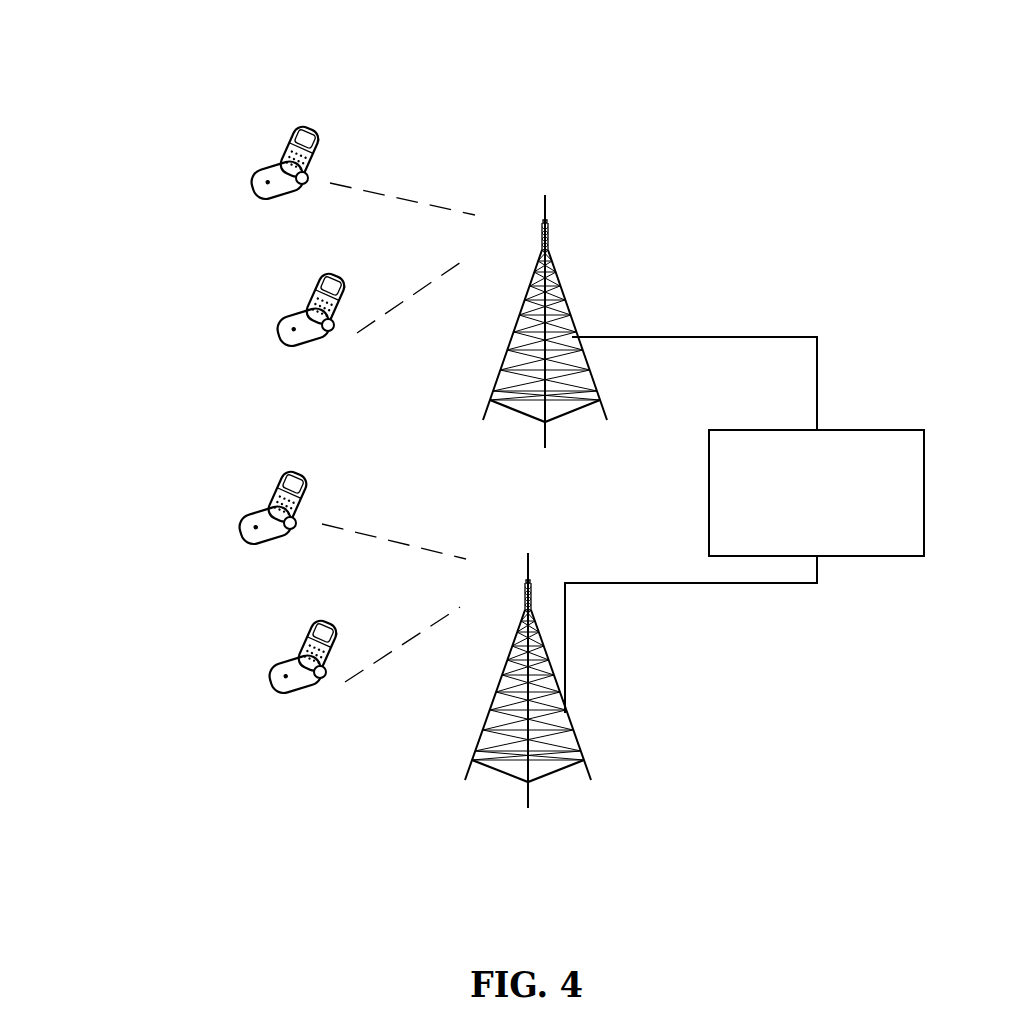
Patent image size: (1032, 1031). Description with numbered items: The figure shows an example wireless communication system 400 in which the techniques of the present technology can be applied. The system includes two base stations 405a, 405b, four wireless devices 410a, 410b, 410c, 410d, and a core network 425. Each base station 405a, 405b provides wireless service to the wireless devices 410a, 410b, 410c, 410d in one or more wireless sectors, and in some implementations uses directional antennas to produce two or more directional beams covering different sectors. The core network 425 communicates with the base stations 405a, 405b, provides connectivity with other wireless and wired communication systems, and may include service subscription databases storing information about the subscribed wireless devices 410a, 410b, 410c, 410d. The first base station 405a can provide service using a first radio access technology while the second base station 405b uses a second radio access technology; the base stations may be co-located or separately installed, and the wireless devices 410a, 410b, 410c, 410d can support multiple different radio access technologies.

The wireless communication system 400 is at (60, 61).
The first base station 405a is at (560, 277).
The second base station 405b is at (535, 593).
The wireless device 410a is at (289, 134).
The wireless device 410b is at (317, 285).
The wireless device 410c is at (278, 481).
The wireless device 410d is at (305, 632).
The core network 425 is at (712, 430).